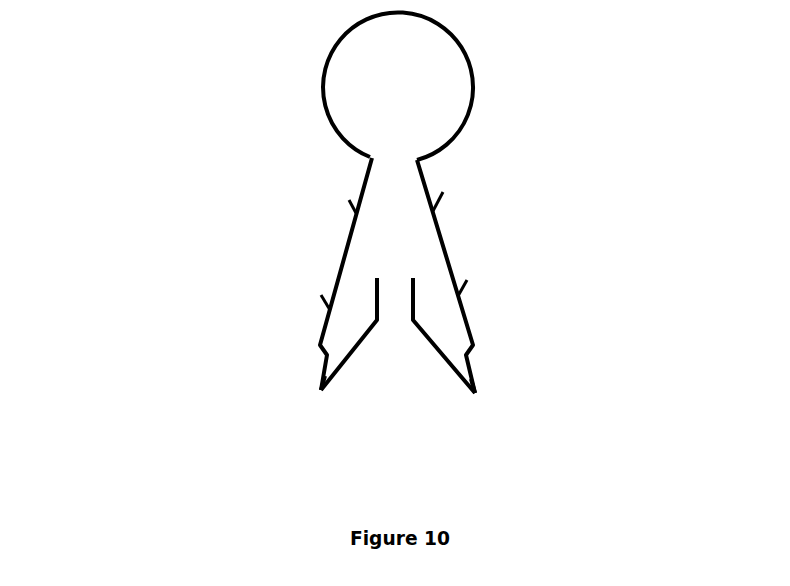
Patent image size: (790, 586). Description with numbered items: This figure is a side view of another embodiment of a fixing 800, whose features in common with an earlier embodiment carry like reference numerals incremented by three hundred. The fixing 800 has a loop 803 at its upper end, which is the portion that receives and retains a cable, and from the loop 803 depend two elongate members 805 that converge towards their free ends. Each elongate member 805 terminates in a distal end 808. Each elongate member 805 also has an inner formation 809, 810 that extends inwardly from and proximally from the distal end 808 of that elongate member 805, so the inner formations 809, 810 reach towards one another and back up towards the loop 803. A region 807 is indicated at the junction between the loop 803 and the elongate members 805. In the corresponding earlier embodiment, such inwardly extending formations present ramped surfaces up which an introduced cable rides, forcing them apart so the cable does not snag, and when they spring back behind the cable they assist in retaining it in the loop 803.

The fixing 800 is at (168, 106).
The loop 803 is at (478, 66).
The elongate member 805 is at (350, 232).
The neck opening 807 is at (383, 157).
The distal end 808 is at (320, 389).
The inner formation 809 is at (427, 323).
The inner formation 810 is at (358, 345).